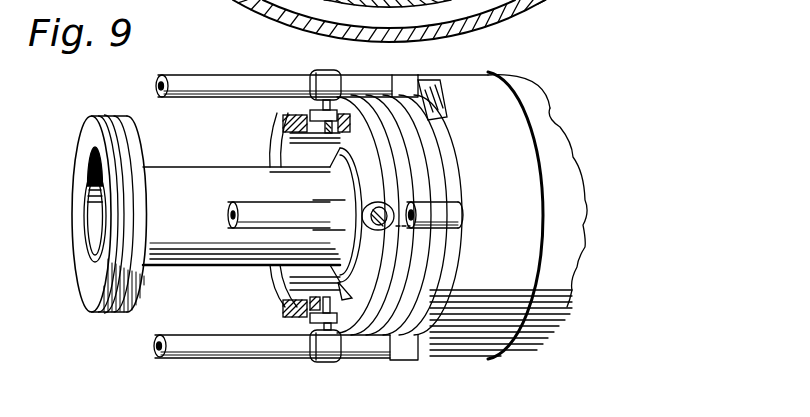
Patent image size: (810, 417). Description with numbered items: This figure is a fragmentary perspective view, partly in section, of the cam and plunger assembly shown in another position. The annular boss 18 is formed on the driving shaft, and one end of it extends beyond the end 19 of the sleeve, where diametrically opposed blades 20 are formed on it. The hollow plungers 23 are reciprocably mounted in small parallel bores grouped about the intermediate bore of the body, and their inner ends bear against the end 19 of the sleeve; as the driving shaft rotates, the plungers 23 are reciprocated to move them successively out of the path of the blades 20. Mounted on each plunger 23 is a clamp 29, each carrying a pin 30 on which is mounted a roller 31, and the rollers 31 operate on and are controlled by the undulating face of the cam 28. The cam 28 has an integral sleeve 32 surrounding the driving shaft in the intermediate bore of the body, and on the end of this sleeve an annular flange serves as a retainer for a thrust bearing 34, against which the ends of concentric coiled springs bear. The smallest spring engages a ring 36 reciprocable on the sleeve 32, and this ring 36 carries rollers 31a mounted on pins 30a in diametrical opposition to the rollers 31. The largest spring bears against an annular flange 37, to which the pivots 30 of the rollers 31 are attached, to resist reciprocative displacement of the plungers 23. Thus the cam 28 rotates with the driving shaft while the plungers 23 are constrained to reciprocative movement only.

The annular boss 18 is at (519, 111).
The end of the sleeve 19 is at (448, 292).
The blades 20 is at (403, 82).
The hollow plunger 23 is at (213, 90).
The cam 28 is at (400, 162).
The clamp 29 is at (320, 66).
The pin 30 is at (310, 112).
The pins 30a is at (386, 213).
The roller 31 is at (282, 118).
The rollers 31a is at (346, 166).
The sleeve 32 is at (207, 250).
The thrust bearing 34 is at (120, 312).
The ring 36 is at (318, 167).
The annular flange 37 is at (268, 146).